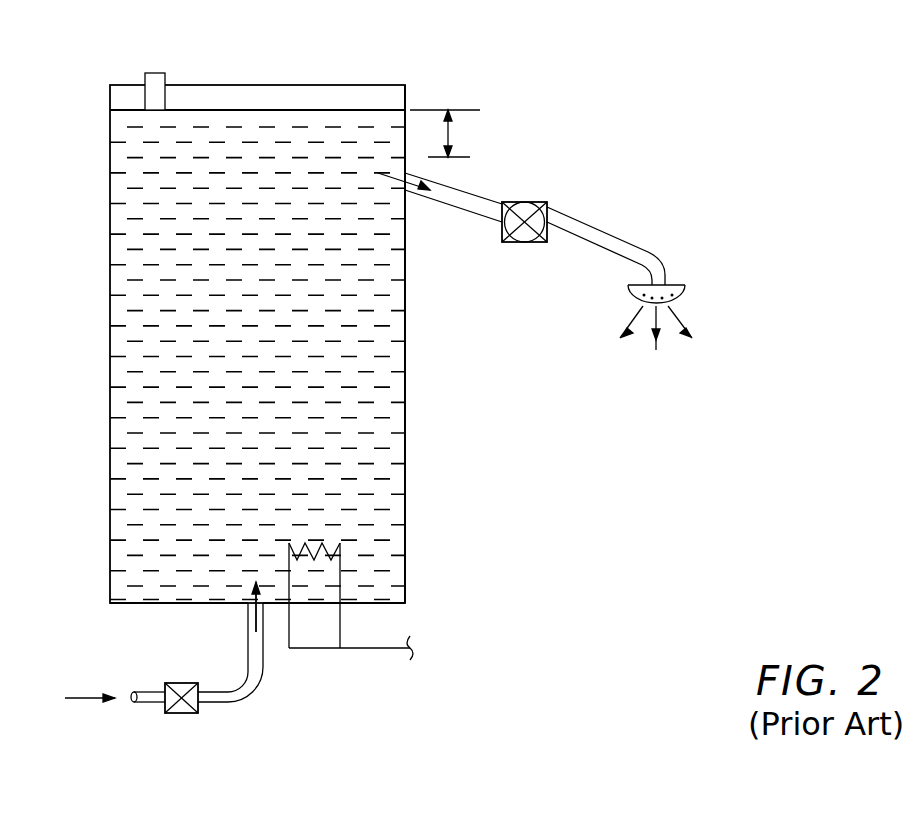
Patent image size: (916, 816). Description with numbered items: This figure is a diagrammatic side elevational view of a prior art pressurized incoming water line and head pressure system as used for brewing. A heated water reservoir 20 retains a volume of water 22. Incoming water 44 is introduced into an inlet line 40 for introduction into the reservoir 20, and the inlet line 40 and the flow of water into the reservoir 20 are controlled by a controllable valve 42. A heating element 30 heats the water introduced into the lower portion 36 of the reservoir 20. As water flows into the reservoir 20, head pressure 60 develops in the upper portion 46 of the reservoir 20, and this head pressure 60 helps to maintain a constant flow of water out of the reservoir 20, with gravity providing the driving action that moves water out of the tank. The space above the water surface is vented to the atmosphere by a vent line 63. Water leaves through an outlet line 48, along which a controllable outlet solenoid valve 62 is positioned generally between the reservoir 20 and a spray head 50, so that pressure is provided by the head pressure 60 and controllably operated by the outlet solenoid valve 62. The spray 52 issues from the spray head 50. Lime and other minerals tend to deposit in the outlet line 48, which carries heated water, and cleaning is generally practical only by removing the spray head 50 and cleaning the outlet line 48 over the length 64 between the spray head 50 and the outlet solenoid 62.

The heated water reservoir 20 is at (110, 490).
The water 22 is at (388, 347).
The heating element 30 is at (340, 580).
The lower portion of the reservoir 36 is at (135, 565).
The inlet line 40 is at (248, 668).
The controllable valve 42 is at (183, 714).
The water 44 is at (92, 697).
The upper portion of the reservoir 46 is at (135, 165).
The outlet line 48 is at (465, 200).
The spray head 50 is at (687, 290).
The spray 52 is at (692, 332).
The head pressure 60 is at (453, 130).
The controllable outlet solenoid valve 62 is at (547, 208).
The vent line 63 is at (145, 97).
The length of outlet line 64 is at (598, 245).